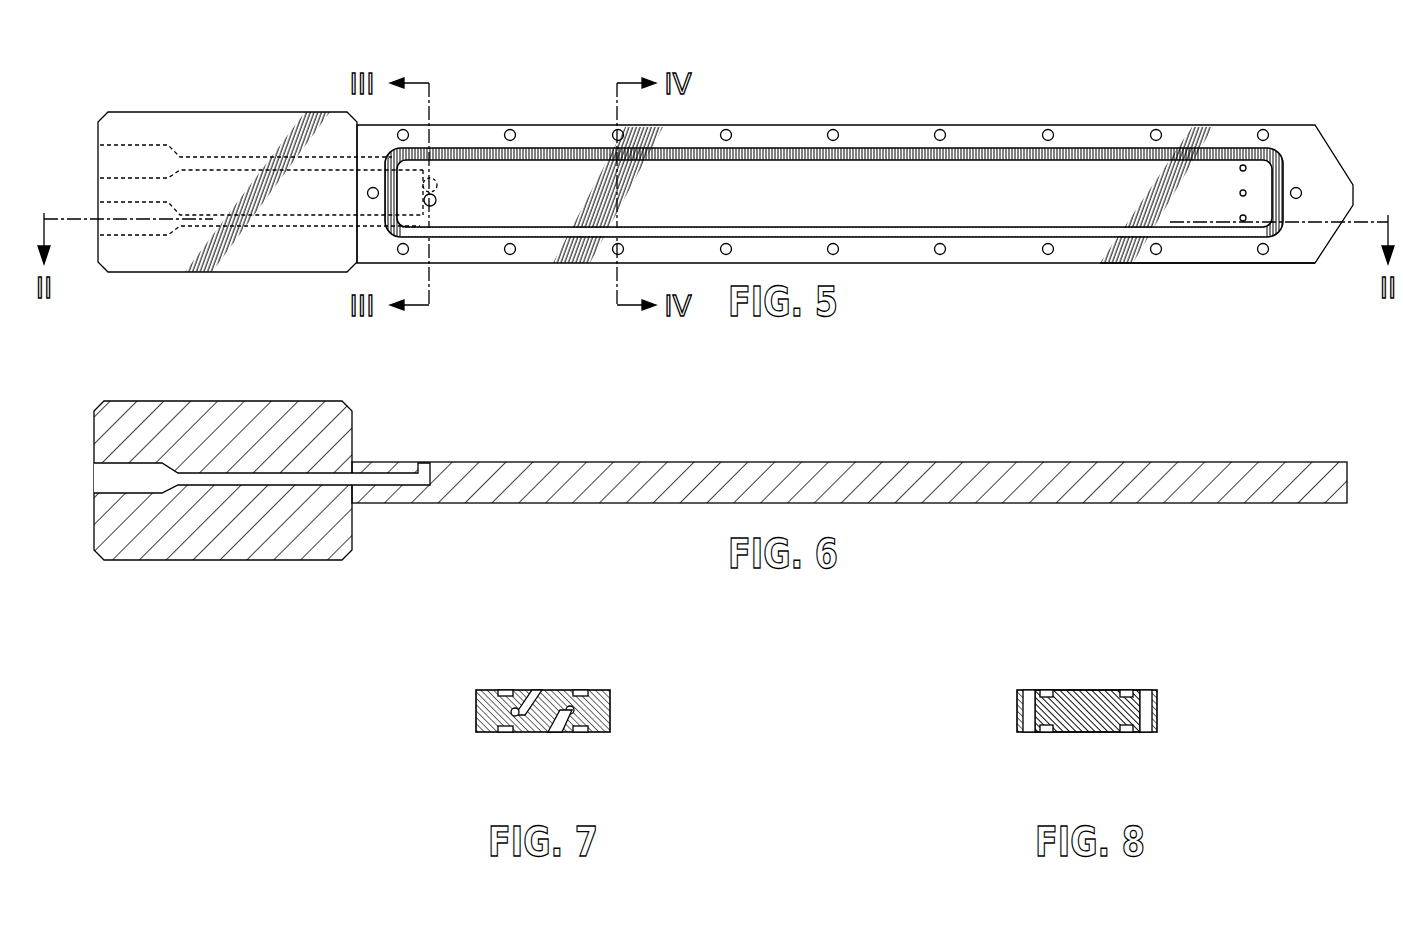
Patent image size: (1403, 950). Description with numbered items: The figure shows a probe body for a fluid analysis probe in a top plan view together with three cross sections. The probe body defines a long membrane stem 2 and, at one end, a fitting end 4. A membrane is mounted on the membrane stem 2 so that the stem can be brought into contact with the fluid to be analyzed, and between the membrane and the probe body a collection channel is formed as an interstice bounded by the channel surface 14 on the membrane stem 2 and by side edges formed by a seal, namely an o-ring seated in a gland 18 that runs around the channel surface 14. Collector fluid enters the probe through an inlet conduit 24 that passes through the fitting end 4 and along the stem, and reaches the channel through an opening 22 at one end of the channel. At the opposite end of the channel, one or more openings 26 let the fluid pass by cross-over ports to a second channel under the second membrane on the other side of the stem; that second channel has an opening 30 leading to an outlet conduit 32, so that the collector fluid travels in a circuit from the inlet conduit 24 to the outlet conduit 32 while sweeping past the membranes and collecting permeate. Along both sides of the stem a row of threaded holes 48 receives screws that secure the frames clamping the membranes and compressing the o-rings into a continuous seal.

In FIG. 5, the membrane stem 2 is at (977, 118).
In FIG. 6, the membrane stem 2 is at (1298, 512).
In FIG. 8, the membrane stem 2 is at (1088, 745).
In FIG. 5, the fitting end 4 is at (168, 118).
In FIG. 5, the channel surface 14 is at (995, 200).
In FIG. 8, the channel surface 14 is at (1088, 690).
In FIG. 5, the gland 18 is at (1193, 238).
In FIG. 7, the gland 18 is at (503, 690).
In FIG. 8, the gland 18 is at (1126, 690).
In FIG. 5, the opening 22 is at (436, 203).
In FIG. 7, the opening 22 is at (537, 690).
In FIG. 5, the inlet conduit 24 is at (277, 228).
In FIG. 6, the inlet conduit 24 is at (236, 477).
In FIG. 7, the inlet conduit 24 is at (511, 714).
In FIG. 5, the openings 26 is at (1247, 195).
In FIG. 5, the opening 30 is at (437, 186).
In FIG. 7, the opening 30 is at (553, 732).
In FIG. 5, the outlet conduit 32 is at (228, 155).
In FIG. 7, the outlet conduit 32 is at (575, 710).
In FIG. 5, the threaded holes 48 is at (833, 129).
In FIG. 8, the threaded holes 48 is at (1028, 712).